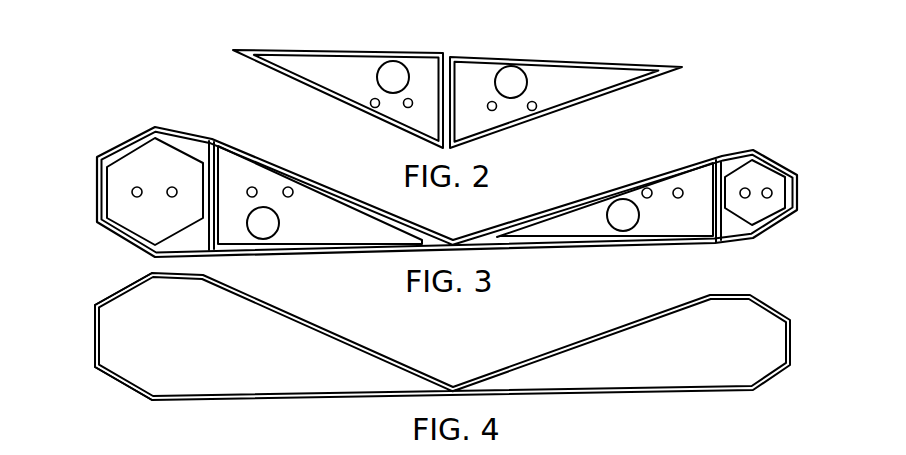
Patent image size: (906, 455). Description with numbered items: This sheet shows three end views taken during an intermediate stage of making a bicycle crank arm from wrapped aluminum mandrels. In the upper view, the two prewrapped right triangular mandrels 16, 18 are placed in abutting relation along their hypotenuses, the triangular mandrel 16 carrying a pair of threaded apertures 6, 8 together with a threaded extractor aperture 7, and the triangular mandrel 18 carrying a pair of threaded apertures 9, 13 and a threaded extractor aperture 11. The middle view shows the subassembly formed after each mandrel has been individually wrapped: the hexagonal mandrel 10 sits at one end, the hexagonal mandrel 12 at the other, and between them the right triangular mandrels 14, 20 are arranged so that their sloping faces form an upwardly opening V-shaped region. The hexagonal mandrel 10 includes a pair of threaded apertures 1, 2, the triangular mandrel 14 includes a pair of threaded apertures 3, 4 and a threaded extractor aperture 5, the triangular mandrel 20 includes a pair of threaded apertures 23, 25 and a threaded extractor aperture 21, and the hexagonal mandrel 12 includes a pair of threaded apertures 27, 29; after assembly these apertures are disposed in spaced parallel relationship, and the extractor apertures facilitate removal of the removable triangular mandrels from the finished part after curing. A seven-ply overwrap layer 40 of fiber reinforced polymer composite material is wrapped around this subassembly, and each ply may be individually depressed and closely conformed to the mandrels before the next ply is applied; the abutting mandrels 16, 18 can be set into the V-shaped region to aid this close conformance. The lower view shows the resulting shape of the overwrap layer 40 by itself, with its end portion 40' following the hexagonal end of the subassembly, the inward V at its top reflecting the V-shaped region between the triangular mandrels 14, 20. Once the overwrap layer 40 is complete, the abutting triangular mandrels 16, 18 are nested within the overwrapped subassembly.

In FIG. 3, the threaded aperture 1 is at (133, 188).
In FIG. 3, the threaded aperture 2 is at (170, 187).
In FIG. 3, the threaded aperture 3 is at (250, 187).
In FIG. 3, the threaded aperture 4 is at (286, 187).
In FIG. 3, the threaded extractor aperture 5 is at (262, 240).
In FIG. 2, the threaded aperture 6 is at (370, 106).
In FIG. 2, the threaded extractor aperture 7 is at (396, 61).
In FIG. 2, the threaded aperture 8 is at (404, 107).
In FIG. 2, the threaded aperture 9 is at (495, 110).
In FIG. 3, the hexagonal mandrel 10 is at (97, 188).
In FIG. 2, the threaded extractor aperture 11 is at (508, 66).
In FIG. 3, the hexagonal mandrel 12 is at (752, 213).
In FIG. 2, the threaded aperture 13 is at (536, 108).
In FIG. 3, the triangular mandrel 14 is at (302, 222).
In FIG. 2, the triangular mandrel 16 is at (300, 62).
In FIG. 2, the triangular mandrel 18 is at (578, 85).
In FIG. 3, the triangular mandrel 20 is at (653, 218).
In FIG. 3, the threaded extractor aperture 21 is at (617, 200).
In FIG. 3, the threaded aperture 23 is at (646, 188).
In FIG. 3, the threaded aperture 25 is at (680, 188).
In FIG. 3, the threaded aperture 27 is at (748, 189).
In FIG. 3, the threaded aperture 29 is at (772, 191).
In FIG. 3, the overwrap layer 40 is at (447, 206).
In FIG. 4, the overwrap layer 40 is at (442, 354).
In FIG. 4, the overwrap layer end 40' is at (145, 359).